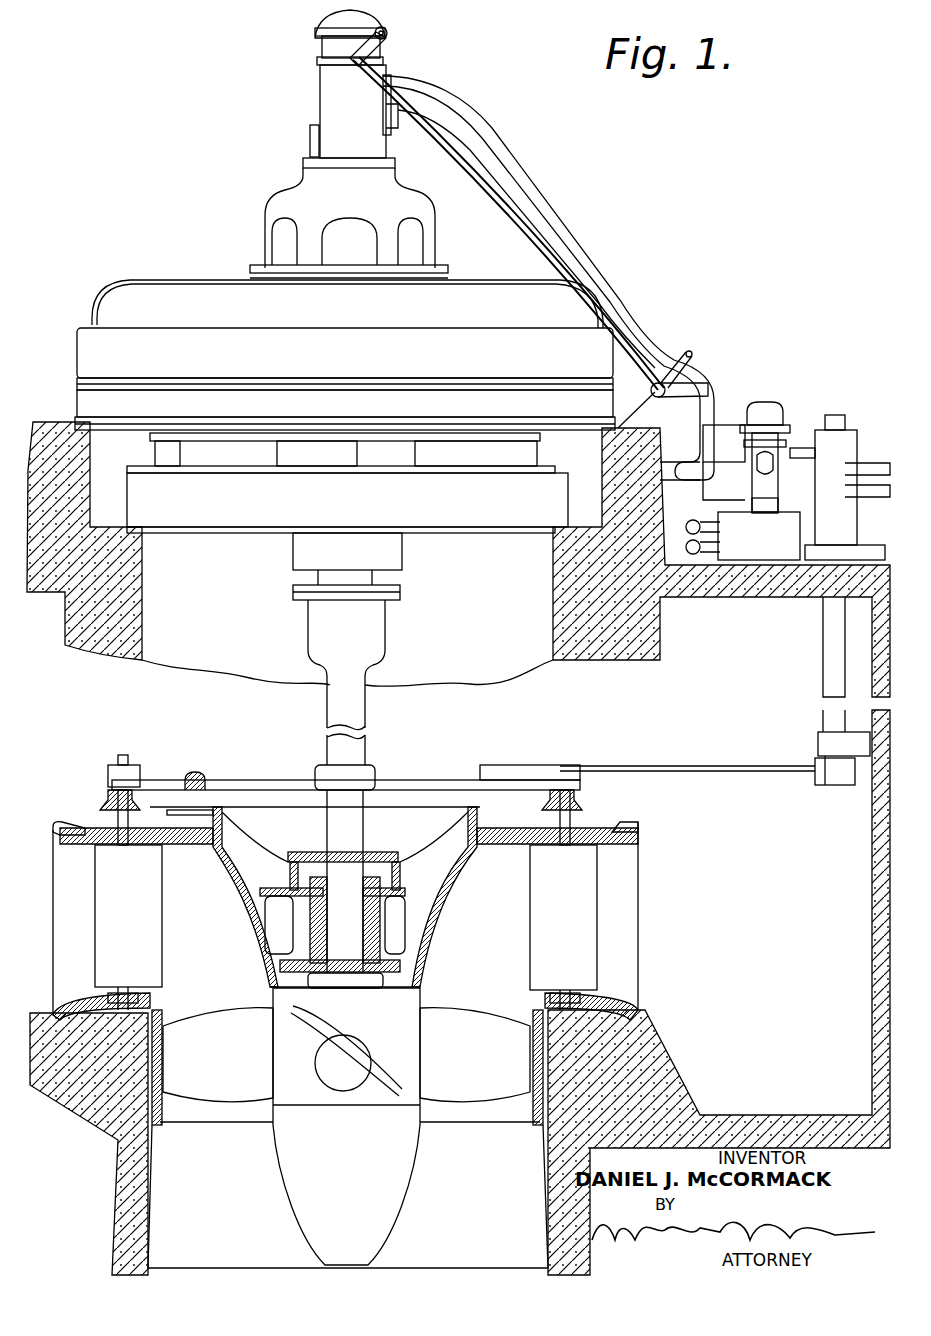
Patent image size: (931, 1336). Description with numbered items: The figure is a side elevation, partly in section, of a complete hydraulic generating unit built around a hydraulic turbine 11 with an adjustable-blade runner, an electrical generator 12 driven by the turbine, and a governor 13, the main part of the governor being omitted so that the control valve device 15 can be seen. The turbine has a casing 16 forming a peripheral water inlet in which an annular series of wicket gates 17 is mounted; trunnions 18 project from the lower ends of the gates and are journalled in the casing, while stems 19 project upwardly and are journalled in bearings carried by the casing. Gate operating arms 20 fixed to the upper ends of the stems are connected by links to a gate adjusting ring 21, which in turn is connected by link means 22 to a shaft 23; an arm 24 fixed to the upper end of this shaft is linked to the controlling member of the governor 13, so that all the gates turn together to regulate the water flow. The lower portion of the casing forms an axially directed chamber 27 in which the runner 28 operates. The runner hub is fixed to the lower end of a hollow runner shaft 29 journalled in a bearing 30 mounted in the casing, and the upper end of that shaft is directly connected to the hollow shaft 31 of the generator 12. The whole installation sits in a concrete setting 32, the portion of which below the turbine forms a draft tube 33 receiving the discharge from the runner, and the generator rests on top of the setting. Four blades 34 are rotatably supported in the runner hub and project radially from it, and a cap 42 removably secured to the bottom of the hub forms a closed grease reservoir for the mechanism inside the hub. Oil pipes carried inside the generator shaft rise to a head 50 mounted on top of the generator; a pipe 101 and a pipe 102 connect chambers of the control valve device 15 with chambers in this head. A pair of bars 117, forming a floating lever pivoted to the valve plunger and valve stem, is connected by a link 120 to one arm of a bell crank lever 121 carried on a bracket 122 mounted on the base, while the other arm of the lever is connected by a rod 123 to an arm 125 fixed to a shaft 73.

The hydraulic turbine 11 is at (365, 876).
The electrical generator 12 is at (345, 355).
The governor 13 is at (828, 440).
The control valve device 15 is at (763, 412).
The casing 16 is at (57, 825).
The wicket gates 17 is at (346, 917).
The trunnions 18 is at (138, 997).
The stems 19 is at (117, 792).
The gate operating arms 20 is at (148, 778).
The gate adjusting ring 21 is at (197, 775).
The link means 22 is at (687, 752).
The shaft 23 is at (825, 672).
The arm 24 is at (870, 462).
The axially directed chamber 27 is at (158, 1112).
The runner 28 is at (346, 1056).
The runner shaft 29 is at (327, 713).
The bearing 30 is at (425, 915).
The generator shaft 31 is at (343, 582).
The concrete setting 32 is at (50, 424).
The draft tube 33 is at (152, 1225).
The blades 34 is at (370, 1085).
The cap 42 is at (346, 1195).
The head 50 is at (349, 144).
The shaft 73 is at (388, 33).
The pipe 101 is at (402, 122).
The pipe 102 is at (458, 124).
The bars 117 is at (728, 428).
The link 120 is at (716, 400).
The bell crank lever 121 is at (695, 365).
The bracket 122 is at (640, 412).
The rod 123 is at (665, 348).
The arm 125 is at (368, 53).